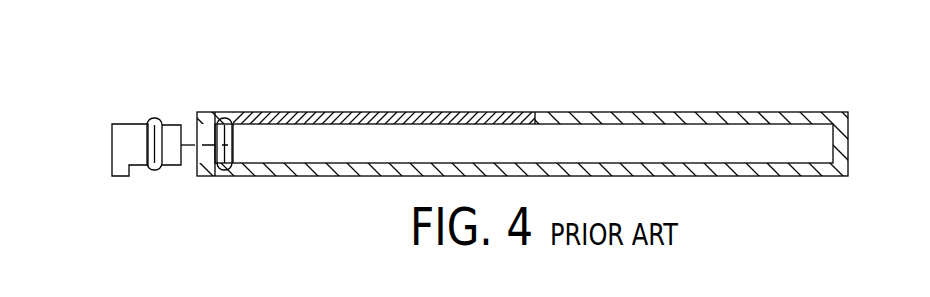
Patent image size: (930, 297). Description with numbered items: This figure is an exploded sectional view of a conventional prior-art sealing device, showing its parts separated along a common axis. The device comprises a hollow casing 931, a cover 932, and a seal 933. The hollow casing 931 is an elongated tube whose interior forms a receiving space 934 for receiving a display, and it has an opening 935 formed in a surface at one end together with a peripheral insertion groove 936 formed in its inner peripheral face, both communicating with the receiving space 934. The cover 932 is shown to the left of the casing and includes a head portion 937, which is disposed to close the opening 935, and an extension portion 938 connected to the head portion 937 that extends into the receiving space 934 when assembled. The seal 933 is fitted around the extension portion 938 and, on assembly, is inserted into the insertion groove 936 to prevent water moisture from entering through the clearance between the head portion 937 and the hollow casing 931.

The hollow casing 931 is at (647, 118).
The cover 932 is at (111, 133).
The seal 933 is at (155, 118).
The receiving space 934 is at (367, 140).
The opening 935 is at (210, 133).
The peripheral insertion groove 936 is at (226, 122).
The head portion 937 is at (123, 142).
The extension portion 938 is at (172, 157).